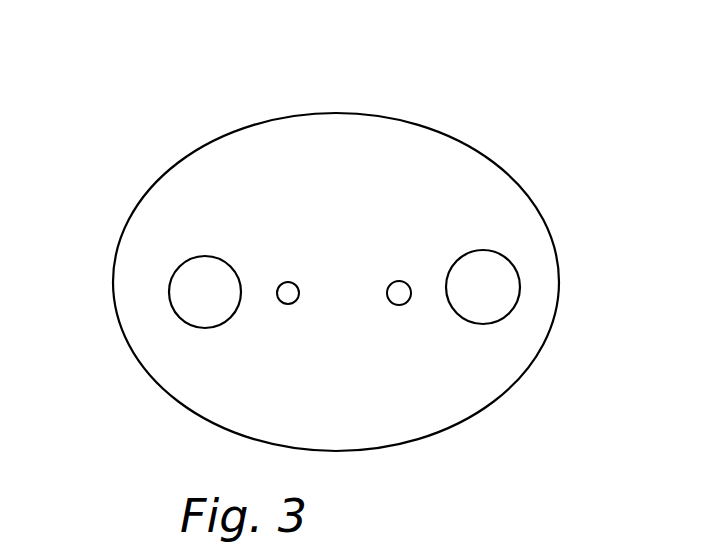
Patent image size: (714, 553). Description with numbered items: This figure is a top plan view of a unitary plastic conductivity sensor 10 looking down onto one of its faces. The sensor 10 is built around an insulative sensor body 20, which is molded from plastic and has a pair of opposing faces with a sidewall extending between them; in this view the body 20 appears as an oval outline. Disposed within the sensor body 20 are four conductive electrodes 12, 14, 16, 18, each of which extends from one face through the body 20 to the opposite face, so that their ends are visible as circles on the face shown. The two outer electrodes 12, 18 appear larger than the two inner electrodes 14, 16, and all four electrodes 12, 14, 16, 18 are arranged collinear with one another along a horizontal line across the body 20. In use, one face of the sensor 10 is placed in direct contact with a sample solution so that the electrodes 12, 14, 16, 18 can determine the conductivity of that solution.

The unitary plastic conductivity sensor 10 is at (460, 138).
The conductive electrode 12 is at (180, 320).
The conductive electrode 14 is at (283, 282).
The conductive electrode 16 is at (393, 306).
The conductive electrode 18 is at (510, 260).
The insulative sensor body 20 is at (383, 147).